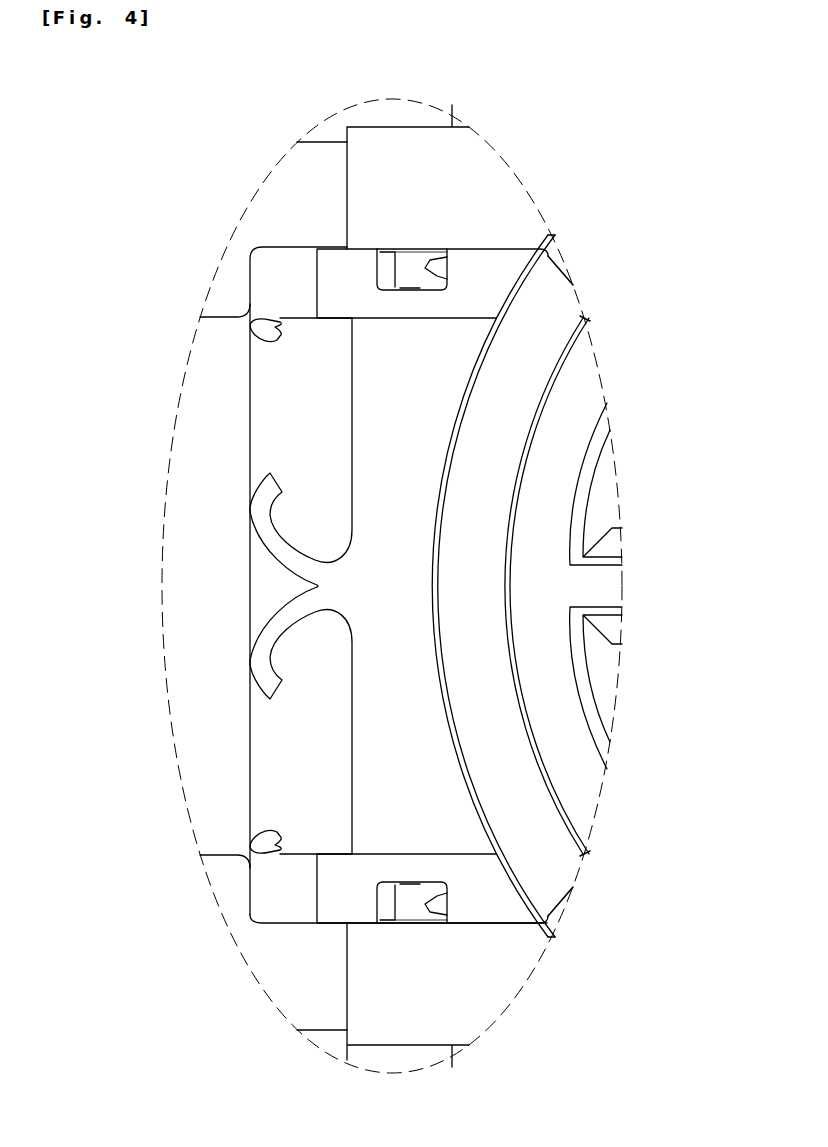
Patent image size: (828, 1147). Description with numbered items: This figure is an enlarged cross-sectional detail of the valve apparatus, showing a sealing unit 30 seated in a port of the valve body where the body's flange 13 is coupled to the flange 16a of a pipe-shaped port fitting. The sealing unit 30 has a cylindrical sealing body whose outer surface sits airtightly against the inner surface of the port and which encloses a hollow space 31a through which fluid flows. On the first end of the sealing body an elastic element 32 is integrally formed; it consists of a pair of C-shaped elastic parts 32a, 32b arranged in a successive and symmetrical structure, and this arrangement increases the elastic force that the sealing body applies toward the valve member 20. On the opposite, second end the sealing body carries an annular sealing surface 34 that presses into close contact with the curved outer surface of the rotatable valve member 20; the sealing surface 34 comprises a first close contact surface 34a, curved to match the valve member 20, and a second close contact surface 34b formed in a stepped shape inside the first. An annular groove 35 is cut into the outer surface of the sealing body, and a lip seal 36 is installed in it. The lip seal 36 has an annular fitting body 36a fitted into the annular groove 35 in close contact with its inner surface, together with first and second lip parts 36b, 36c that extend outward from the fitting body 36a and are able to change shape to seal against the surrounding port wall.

The flange 13 is at (374, 175).
The flange of port fitting 16a is at (278, 190).
The valve member 20 is at (498, 604).
The sealing unit 30 is at (148, 484).
The hollow space 31a is at (380, 590).
The elastic element 32 is at (196, 586).
The C-shaped elastic part 32a is at (262, 522).
The C-shaped elastic part 32b is at (262, 652).
The annular sealing surface 34 is at (509, 586).
The first close contact surface 34a is at (500, 282).
The second close contact surface 34b is at (500, 287).
The annular groove 35 is at (395, 250).
The lip seal 36 is at (472, 584).
The annular fitting body 36a is at (393, 280).
The first lip part 36b is at (430, 258).
The second lip part 36c is at (433, 293).